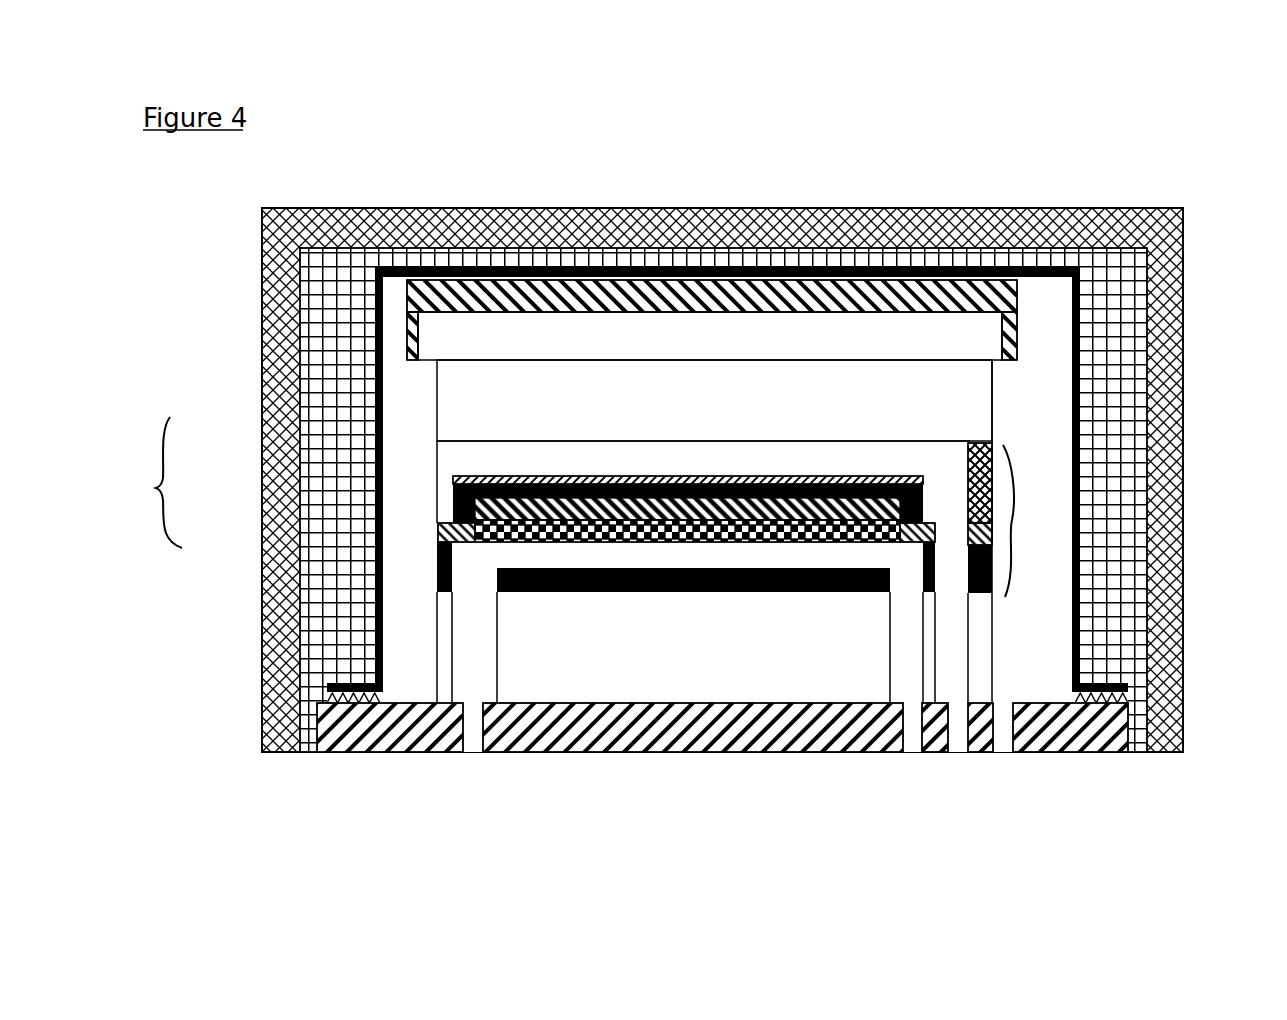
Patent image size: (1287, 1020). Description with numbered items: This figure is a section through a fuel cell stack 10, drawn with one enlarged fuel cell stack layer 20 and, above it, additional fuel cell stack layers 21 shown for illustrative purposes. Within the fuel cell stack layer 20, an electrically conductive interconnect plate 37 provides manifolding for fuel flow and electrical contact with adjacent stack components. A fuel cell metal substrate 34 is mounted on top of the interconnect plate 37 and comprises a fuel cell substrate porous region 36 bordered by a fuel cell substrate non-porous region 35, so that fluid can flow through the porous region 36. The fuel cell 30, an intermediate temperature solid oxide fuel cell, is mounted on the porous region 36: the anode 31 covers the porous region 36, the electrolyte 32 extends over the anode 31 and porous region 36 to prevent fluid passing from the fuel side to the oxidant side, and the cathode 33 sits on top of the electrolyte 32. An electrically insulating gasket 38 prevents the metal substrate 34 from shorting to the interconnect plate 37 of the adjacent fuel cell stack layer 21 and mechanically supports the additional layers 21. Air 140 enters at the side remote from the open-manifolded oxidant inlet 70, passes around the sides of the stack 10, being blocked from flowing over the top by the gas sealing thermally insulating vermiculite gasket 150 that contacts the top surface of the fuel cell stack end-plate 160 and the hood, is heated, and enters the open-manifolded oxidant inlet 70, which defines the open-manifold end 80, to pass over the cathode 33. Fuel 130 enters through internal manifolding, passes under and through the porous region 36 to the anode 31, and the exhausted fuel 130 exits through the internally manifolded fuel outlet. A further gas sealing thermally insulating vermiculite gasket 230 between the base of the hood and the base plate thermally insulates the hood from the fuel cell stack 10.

The solid oxide fuel cell stack 10 is at (947, 396).
The fuel cell stack layer 20 is at (1012, 530).
The additional fuel cell stack layers 21 is at (975, 407).
The fuel cell 30 is at (139, 482).
The anode 31 is at (437, 525).
The electrolyte 32 is at (453, 495).
The cathode 33 is at (453, 478).
The fuel cell metal substrate 34 is at (378, 526).
The fuel cell substrate non-porous region 35 is at (463, 545).
The fuel cell substrate porous region 36 is at (525, 543).
The electrically conductive interconnect plate 37 is at (968, 593).
The electrically insulating gasket 38 is at (968, 456).
The open-manifolded oxidant inlet 70 is at (447, 455).
The open-manifold end 80 is at (445, 413).
The fuel 130 is at (480, 694).
The air 140 is at (957, 695).
The gas sealing thermally insulating vermiculite gasket 150 is at (415, 303).
The fuel cell stack end-plate 160 is at (447, 336).
The gas sealing thermally insulating vermiculite gasket 230 is at (327, 700).